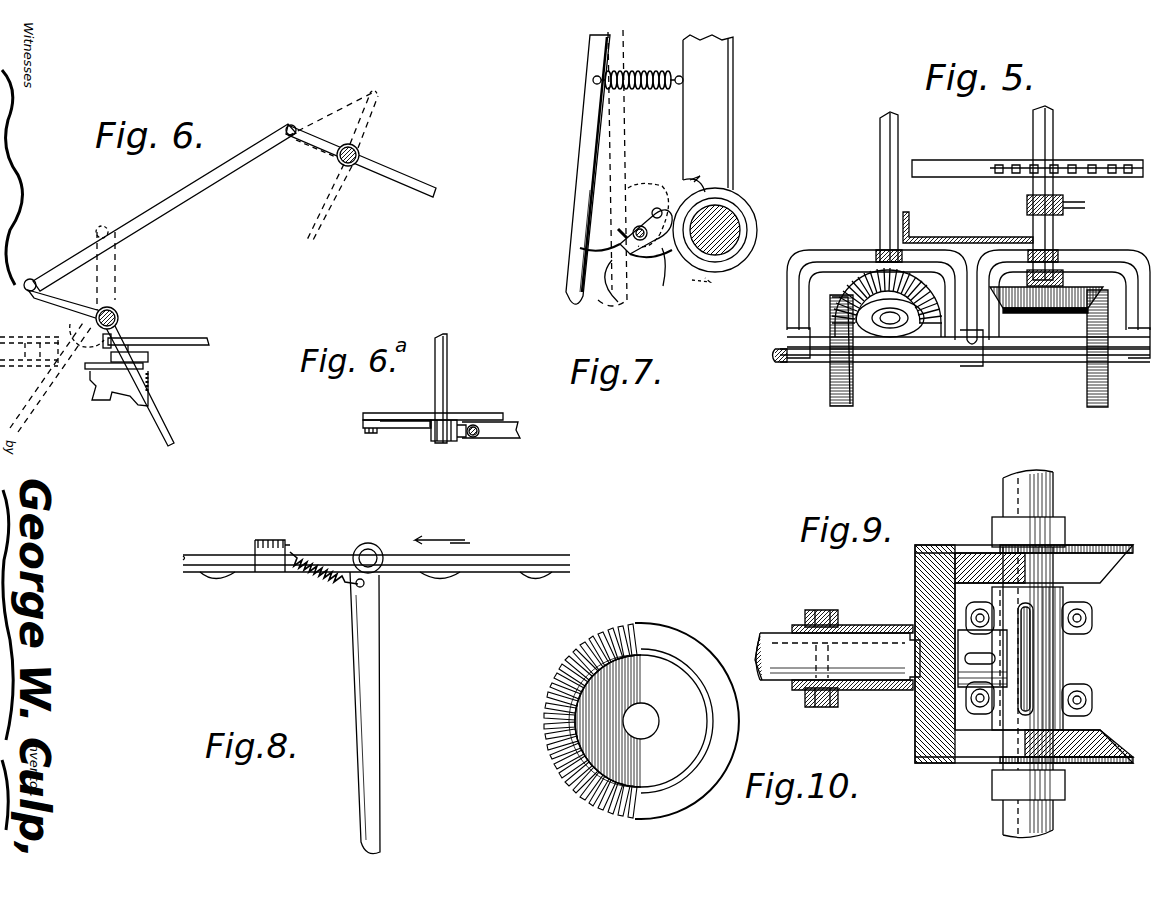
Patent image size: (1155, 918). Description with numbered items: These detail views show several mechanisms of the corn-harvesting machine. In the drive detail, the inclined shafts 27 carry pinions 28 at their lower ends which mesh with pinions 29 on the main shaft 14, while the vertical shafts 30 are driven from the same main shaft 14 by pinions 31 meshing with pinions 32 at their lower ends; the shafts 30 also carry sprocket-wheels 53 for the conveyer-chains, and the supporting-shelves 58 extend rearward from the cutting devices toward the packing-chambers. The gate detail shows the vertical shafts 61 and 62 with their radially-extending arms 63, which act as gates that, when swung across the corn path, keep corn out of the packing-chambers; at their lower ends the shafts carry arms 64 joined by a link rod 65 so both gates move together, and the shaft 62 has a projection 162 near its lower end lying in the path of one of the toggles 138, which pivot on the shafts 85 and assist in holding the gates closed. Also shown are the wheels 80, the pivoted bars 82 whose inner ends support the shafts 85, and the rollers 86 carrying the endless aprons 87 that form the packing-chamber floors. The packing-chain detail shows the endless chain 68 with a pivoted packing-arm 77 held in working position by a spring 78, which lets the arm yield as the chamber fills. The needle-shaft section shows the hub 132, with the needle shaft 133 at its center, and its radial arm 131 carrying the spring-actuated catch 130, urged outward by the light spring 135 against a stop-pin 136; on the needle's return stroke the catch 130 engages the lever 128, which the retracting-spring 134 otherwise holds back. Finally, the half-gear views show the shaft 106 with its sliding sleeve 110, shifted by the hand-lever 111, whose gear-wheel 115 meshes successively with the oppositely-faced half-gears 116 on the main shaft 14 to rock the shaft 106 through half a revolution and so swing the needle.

In FIG. 5, the main shaft 14 is at (930, 362).
In FIG. 9, the main shaft 14 is at (1003, 486).
In FIG. 5, the inclined shafts 27 is at (880, 172).
In FIG. 5, the pinions 28 is at (868, 272).
In FIG. 5, the pinions 29 is at (832, 396).
In FIG. 5, the vertically-disposed shafts 30 is at (1054, 134).
In FIG. 5, the pinions 31 is at (1087, 390).
In FIG. 5, the pinions 32 is at (1030, 316).
In FIG. 5, the sprocket-wheels 53 is at (1004, 162).
In FIG. 5, the supporting-shelves 58 is at (964, 238).
In FIG. 6, the vertical shaft 61 is at (323, 148).
In FIG. 6, the vertical shaft 62 is at (118, 314).
In FIG. 6A, the vertical shaft 62 is at (448, 366).
In FIG. 6, the radially-extending arms (gates) 63 is at (420, 194).
In FIG. 6, the radially-extending arms 64 is at (44, 300).
In FIG. 6A, the radially-extending arms 64 is at (388, 431).
In FIG. 6, the link rod 65 is at (187, 194).
In FIG. 6A, the link rod 65 is at (404, 412).
In FIG. 8, the endless chain 68 is at (482, 568).
In FIG. 8, the pivoted arms 77 is at (372, 676).
In FIG. 8, the springs 78 is at (316, 556).
In FIG. 6, the rollers or wheels 80 is at (148, 358).
In FIG. 6, the bars 82 is at (94, 370).
In FIG. 6, the shafts 85 is at (118, 352).
In FIG. 6A, the shafts 85 is at (472, 440).
In FIG. 6, the rollers 86 is at (30, 372).
In FIG. 6, the endless aprons 87 is at (148, 390).
In FIG. 9, the shaft 106 is at (768, 688).
In FIG. 9, the sleeve 110 is at (870, 624).
In FIG. 9, the hand-lever 111 is at (806, 620).
In FIG. 10, the gear-wheel 115 is at (668, 624).
In FIG. 9, the gear-wheel 115 is at (915, 584).
In FIG. 9, the half-gears 116 is at (956, 546).
In FIG. 7, the lever 128 is at (583, 162).
In FIG. 7, the pivoted spring-actuated catch 130 is at (600, 250).
In FIG. 7, the arm 131 is at (663, 270).
In FIG. 7, the hub 132 is at (746, 206).
In FIG. 7, the shaft 133 is at (732, 248).
In FIG. 7, the retracting-spring 134 is at (660, 94).
In FIG. 7, the light spring 135 is at (612, 282).
In FIG. 7, the stop-pin 136 is at (646, 200).
In FIG. 6, the links or toggles 138 is at (209, 340).
In FIG. 6A, the links or toggles 138 is at (512, 440).
In FIG. 6, the projection 162 is at (96, 332).
In FIG. 6A, the projection 162 is at (438, 442).